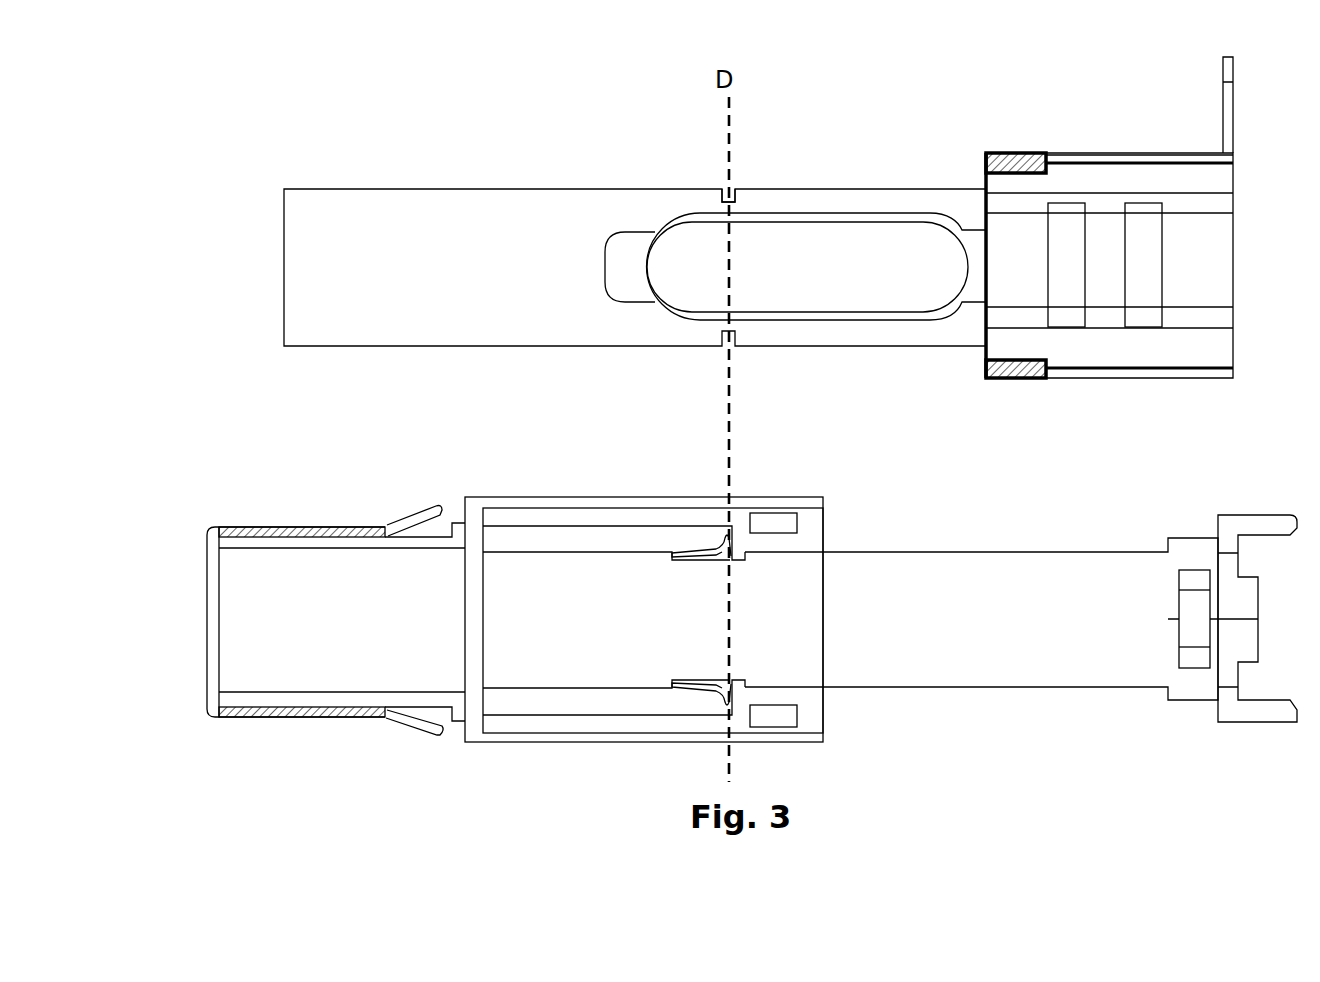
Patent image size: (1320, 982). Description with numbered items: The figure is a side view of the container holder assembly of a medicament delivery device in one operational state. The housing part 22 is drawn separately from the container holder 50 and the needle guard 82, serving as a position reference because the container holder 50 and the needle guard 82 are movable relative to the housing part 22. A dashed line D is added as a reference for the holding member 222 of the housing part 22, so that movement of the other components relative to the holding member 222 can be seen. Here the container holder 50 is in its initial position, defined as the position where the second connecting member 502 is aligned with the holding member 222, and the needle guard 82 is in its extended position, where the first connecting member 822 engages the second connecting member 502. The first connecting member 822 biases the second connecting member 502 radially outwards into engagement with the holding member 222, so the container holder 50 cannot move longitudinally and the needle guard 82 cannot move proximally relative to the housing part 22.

The housing part 22 is at (635, 267).
The holding member 222 is at (730, 190).
The needle guard 82 is at (336, 621).
The first connecting member 822 is at (793, 548).
The second connecting member 502 is at (732, 552).
The container holder 50 is at (1021, 618).